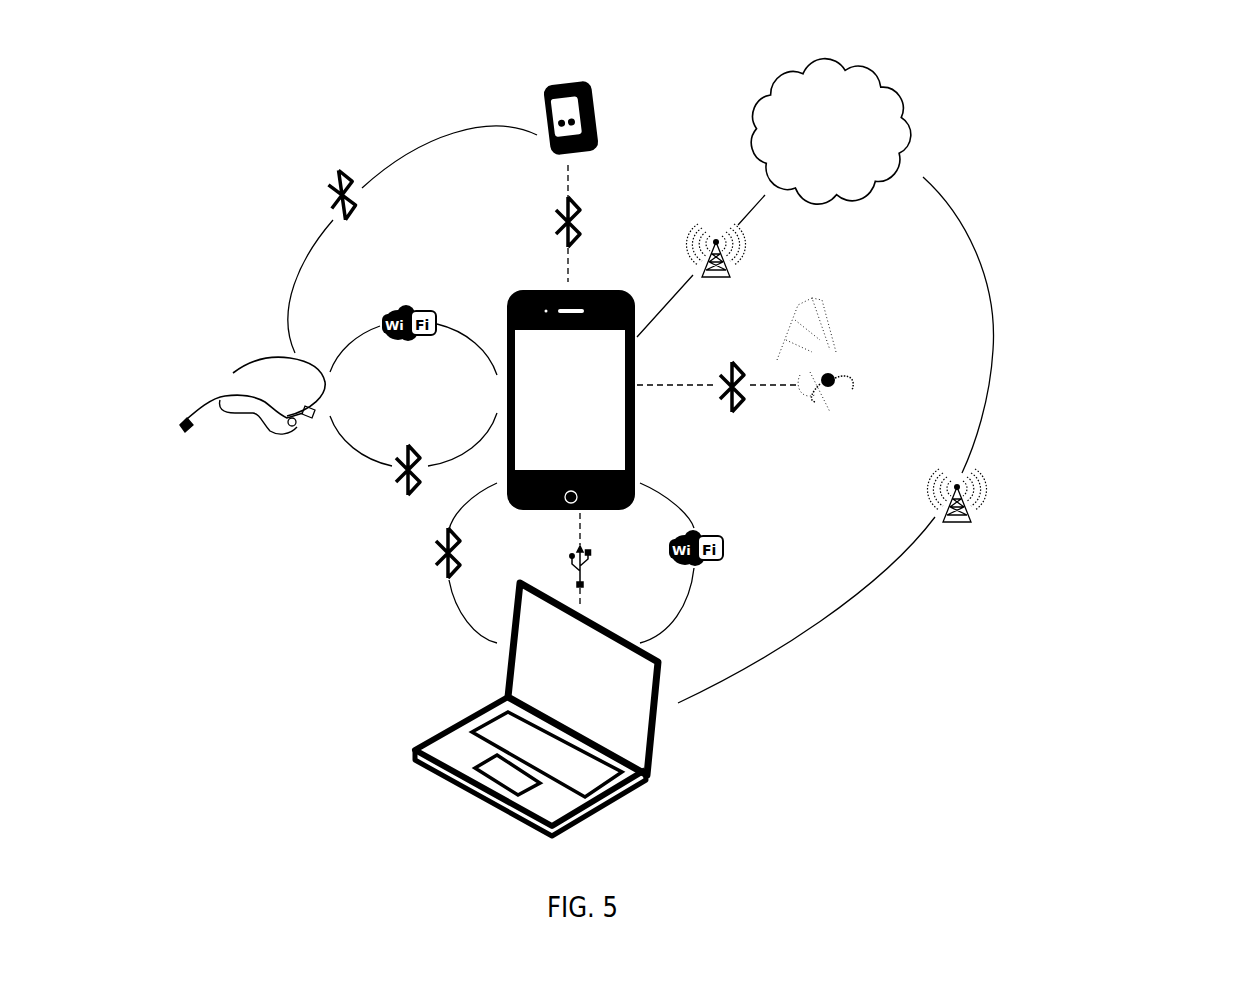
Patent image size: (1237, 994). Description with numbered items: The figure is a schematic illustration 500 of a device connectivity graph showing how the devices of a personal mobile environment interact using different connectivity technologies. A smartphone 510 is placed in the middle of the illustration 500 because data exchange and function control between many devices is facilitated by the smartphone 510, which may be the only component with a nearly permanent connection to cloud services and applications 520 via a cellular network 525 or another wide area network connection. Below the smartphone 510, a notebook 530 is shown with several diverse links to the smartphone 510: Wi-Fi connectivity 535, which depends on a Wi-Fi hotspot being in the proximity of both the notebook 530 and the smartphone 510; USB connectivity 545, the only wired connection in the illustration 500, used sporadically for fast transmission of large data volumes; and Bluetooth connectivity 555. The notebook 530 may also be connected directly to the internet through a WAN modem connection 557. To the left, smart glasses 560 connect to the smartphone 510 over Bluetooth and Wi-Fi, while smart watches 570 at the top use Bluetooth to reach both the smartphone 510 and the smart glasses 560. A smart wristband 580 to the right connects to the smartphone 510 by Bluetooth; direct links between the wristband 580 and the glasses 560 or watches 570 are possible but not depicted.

The illustration 500 is at (1165, 120).
The smartphone 510 is at (500, 307).
The cloud services and applications 520 is at (913, 144).
The cellular network 525 is at (743, 255).
The notebook 530 is at (667, 758).
The Wi-Fi connectivity 535 is at (735, 545).
The USB connectivity 545 is at (587, 570).
The Bluetooth connectivity 555 is at (430, 560).
The WAN modem connection 557 is at (913, 560).
The smart glasses 560 is at (230, 383).
The smart watches 570 is at (542, 110).
The smart wristband 580 is at (835, 368).